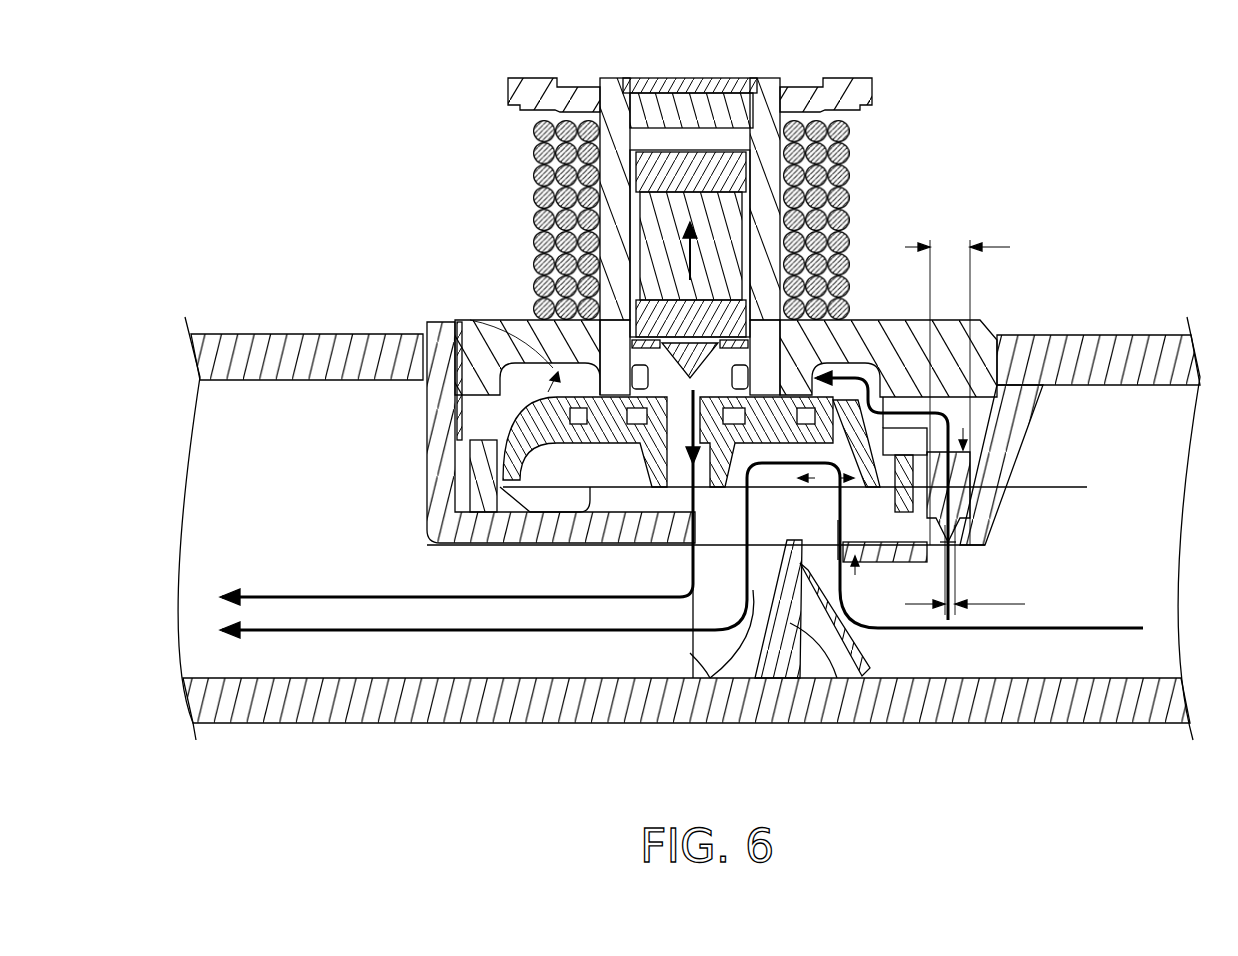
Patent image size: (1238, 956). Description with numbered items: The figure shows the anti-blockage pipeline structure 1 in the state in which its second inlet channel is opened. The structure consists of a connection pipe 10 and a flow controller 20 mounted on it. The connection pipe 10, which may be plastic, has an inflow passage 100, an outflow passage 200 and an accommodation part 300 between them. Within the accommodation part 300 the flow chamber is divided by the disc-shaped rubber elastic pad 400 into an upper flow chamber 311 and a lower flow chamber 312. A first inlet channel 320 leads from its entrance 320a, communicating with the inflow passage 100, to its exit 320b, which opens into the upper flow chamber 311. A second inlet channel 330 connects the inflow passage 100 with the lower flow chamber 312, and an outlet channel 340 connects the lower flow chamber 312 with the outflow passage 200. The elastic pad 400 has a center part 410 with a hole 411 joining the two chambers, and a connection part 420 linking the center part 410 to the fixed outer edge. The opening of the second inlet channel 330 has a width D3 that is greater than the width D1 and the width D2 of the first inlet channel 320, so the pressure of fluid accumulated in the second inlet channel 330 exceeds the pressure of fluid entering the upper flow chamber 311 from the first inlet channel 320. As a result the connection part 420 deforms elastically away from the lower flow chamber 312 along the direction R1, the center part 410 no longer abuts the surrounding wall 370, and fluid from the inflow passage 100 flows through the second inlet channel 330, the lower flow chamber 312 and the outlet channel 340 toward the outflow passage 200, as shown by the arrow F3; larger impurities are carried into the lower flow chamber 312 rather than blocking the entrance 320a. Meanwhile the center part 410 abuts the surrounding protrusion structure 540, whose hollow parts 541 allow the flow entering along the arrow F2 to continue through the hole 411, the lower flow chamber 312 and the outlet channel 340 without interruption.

The anti-blockage pipeline structure 1 is at (115, 32).
The connection pipe 10 is at (320, 737).
The inflow passage 100 is at (962, 700).
The outflow passage 200 is at (415, 710).
The accommodation part 300 is at (462, 545).
The flow controller 20 is at (508, 82).
The hole 411 is at (548, 263).
The direction R1 is at (695, 272).
The elastic pad 400 is at (432, 472).
The center part 410 is at (455, 322).
The connection part 420 is at (455, 417).
The upper flow chamber 311 is at (460, 497).
The lower flow chamber 312 is at (590, 540).
The surrounding protrusion structure 540 is at (668, 442).
The hollow parts 541 is at (815, 395).
The first inlet channel 320 is at (970, 502).
The entrance 320a is at (960, 550).
The exit 320b is at (968, 432).
The second inlet channel 330 is at (872, 563).
The outlet channel 340 is at (754, 598).
The surrounding wall 370 is at (790, 625).
The arrow F2 is at (335, 597).
The arrow F3 is at (330, 632).
The width D1 is at (966, 570).
The width D2 is at (957, 385).
The width D3 is at (1074, 465).